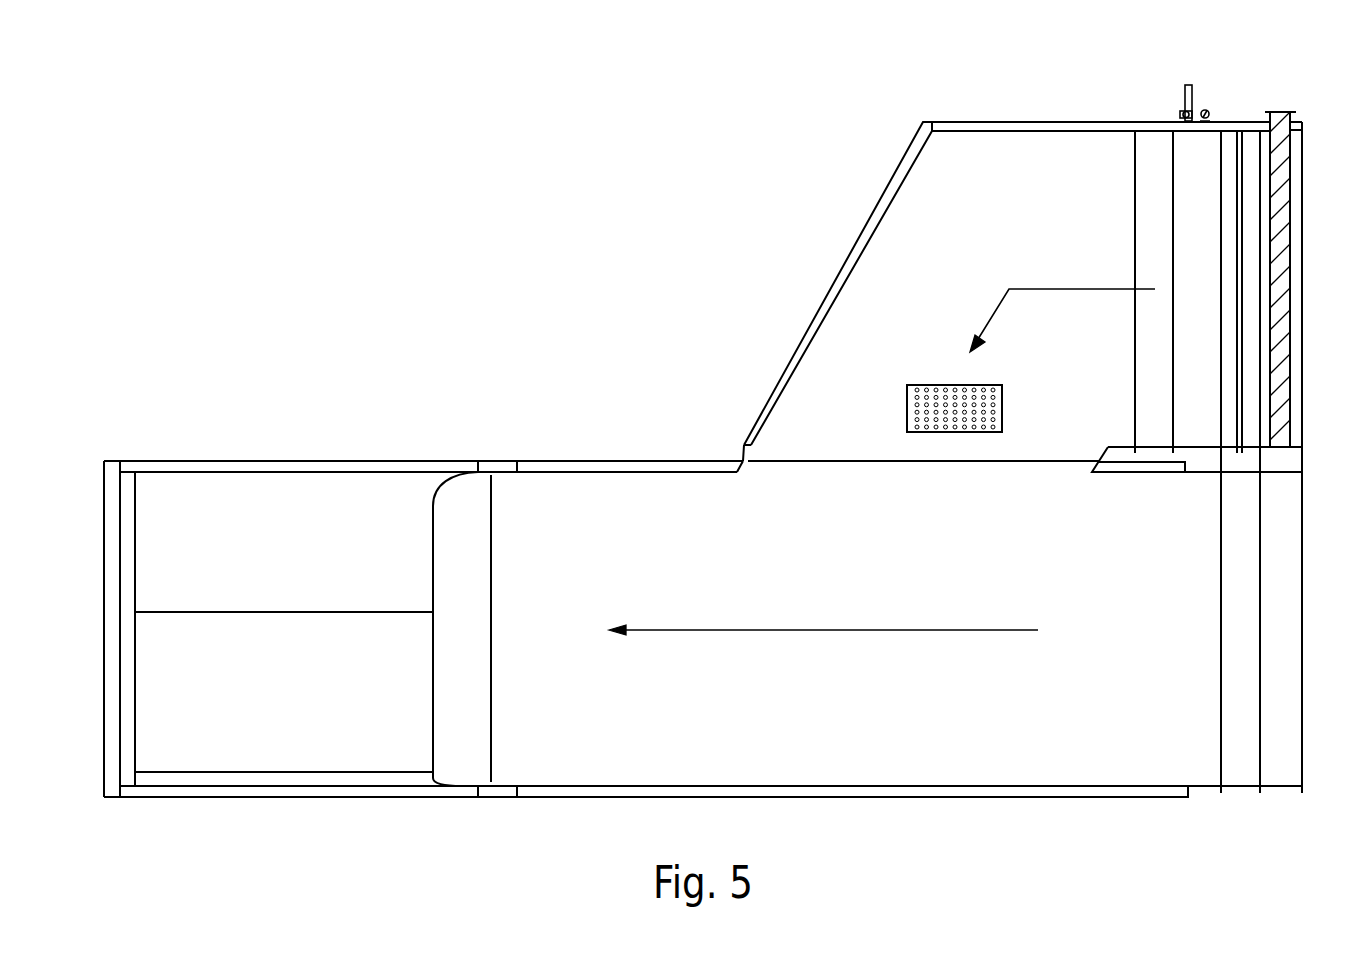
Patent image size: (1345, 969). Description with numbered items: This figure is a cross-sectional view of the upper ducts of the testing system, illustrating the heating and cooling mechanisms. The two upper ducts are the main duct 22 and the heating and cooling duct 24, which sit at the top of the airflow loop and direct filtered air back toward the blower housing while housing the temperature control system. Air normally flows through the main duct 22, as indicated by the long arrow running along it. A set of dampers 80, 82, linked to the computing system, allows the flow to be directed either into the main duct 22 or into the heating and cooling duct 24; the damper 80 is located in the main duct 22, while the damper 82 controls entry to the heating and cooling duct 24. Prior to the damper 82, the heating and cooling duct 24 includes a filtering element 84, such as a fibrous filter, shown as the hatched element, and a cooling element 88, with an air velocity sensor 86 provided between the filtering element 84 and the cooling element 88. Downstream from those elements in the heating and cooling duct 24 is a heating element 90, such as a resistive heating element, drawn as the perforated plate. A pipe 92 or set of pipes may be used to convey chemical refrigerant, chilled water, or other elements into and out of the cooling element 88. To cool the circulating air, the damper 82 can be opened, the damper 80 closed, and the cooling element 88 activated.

The main duct 22 is at (618, 487).
The heating and cooling duct 24 is at (1025, 143).
The damper 80 is at (1243, 773).
The damper 82 is at (1148, 145).
The filtering element 84 is at (1285, 110).
The air velocity sensor 86 is at (1240, 135).
The cooling element 88 is at (1212, 137).
The heating element 90 is at (938, 385).
The pipe 92 is at (1188, 83).